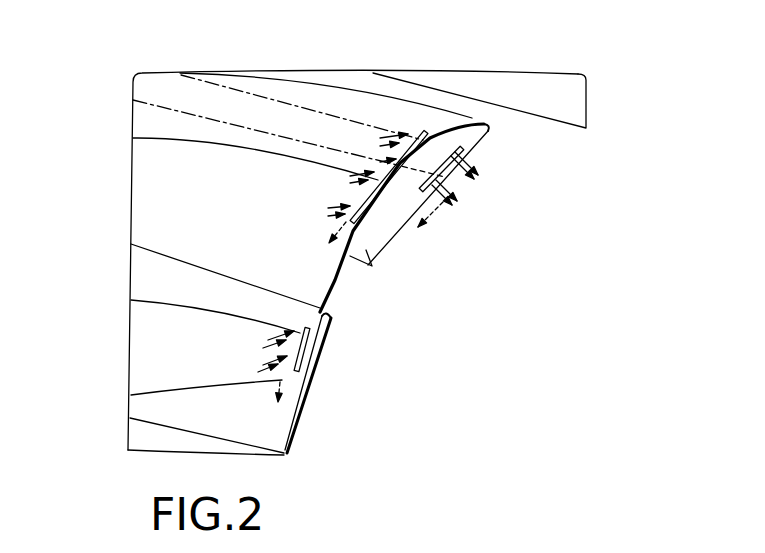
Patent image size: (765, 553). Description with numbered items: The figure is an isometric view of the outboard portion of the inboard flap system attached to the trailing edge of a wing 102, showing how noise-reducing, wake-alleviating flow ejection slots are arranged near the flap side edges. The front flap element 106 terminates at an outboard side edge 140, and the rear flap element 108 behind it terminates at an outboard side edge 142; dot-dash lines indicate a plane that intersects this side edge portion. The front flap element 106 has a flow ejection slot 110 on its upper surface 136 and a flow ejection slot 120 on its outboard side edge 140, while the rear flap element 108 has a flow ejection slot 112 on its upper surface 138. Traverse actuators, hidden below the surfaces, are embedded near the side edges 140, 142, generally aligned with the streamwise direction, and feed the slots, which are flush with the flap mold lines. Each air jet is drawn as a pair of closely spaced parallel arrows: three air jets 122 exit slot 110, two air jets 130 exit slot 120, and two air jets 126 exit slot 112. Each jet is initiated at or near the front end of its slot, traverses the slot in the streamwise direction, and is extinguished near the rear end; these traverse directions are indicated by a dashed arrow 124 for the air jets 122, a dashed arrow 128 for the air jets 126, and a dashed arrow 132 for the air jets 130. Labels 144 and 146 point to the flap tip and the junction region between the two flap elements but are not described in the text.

The wing 102 is at (567, 131).
The front flap element 106 is at (467, 113).
The rear flap element 108 is at (416, 288).
The flow ejection slot 110 is at (383, 205).
The flow ejection slot 112 is at (305, 360).
The flow ejection slot 120 is at (413, 150).
The air jets 122 is at (135, 138).
The dashed arrow 124 is at (343, 212).
The air jets 126 is at (137, 301).
The dashed arrow 128 is at (135, 397).
The air jets 130 is at (468, 163).
The dashed arrow 132 is at (440, 205).
The upper surface 136 is at (247, 105).
The upper surface 138 is at (140, 263).
The outboard side edge 140 is at (407, 212).
The outboard side edge 142 is at (300, 398).
The airfoil tip 144 is at (482, 142).
The airfoil junction 146 is at (328, 333).